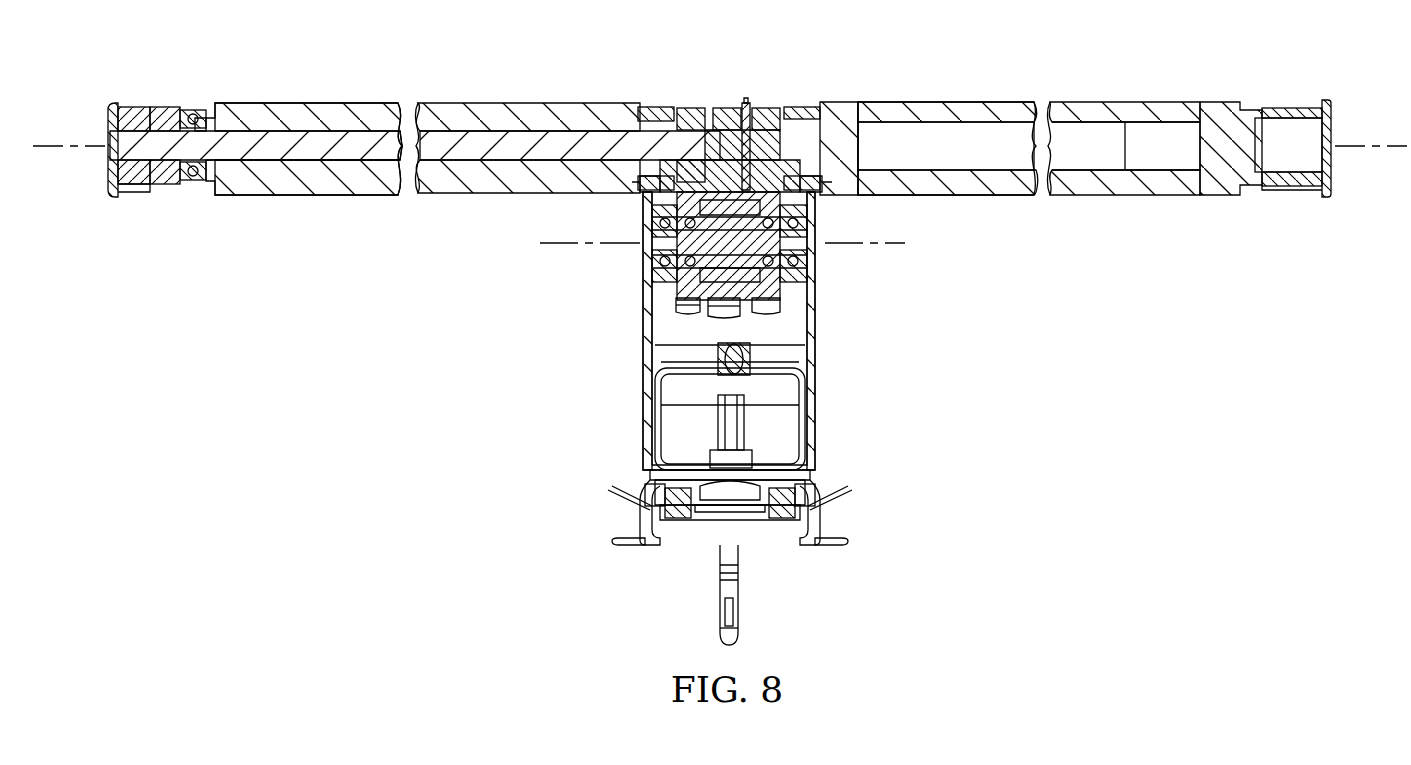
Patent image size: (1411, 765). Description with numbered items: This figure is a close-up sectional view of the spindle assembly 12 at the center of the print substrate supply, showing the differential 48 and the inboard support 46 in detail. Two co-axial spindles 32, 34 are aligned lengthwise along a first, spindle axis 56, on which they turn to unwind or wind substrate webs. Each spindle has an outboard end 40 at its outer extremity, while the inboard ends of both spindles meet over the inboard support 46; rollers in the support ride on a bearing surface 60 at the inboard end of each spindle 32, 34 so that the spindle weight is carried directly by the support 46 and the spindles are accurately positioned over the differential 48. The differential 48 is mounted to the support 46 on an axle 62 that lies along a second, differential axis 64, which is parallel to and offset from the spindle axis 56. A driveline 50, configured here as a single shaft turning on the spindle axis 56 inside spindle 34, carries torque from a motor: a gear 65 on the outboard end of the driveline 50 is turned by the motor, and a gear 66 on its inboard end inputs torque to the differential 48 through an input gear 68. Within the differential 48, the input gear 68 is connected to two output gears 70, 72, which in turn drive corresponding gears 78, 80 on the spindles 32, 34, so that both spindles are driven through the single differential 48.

The spindle assembly 12 is at (508, 256).
The spindle 32 is at (972, 108).
The spindle 34 is at (541, 108).
The outboard end 40 is at (132, 108).
The inboard support 46 is at (832, 388).
The differential 48 is at (678, 324).
The driveline 50 is at (305, 145).
The spindle axis 56 is at (1372, 146).
The bearing surface 60 is at (655, 108).
The axle 62 is at (655, 240).
The differential axis 64 is at (902, 246).
The gear 65 is at (162, 108).
The gear 66 is at (726, 108).
The input gear 68 is at (740, 318).
The output gear 70 is at (750, 312).
The output gear 72 is at (680, 312).
The gear 78 is at (764, 108).
The gear 80 is at (690, 108).